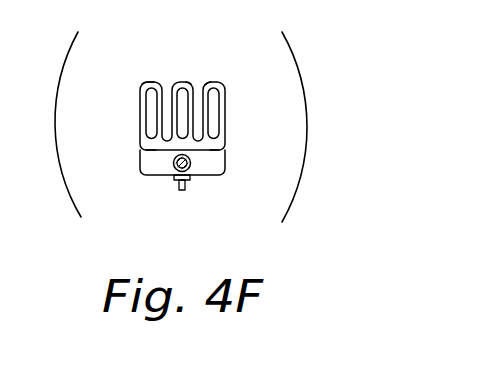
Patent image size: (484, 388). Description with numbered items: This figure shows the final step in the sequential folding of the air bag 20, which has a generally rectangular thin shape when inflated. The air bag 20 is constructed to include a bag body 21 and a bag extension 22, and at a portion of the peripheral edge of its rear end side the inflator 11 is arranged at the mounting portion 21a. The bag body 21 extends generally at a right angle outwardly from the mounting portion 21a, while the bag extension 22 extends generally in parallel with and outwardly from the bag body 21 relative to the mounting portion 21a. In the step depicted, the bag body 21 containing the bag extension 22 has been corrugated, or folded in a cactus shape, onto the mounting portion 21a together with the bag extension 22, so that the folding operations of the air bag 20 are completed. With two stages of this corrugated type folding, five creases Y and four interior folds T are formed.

The air bag 20 is at (180, 114).
The bag body 21 is at (152, 81).
The mounting portion 21a is at (200, 177).
The bag extension 22 is at (147, 112).
The inflator 11 is at (176, 167).
The creases Y is at (142, 82).
The interior folds T is at (148, 151).